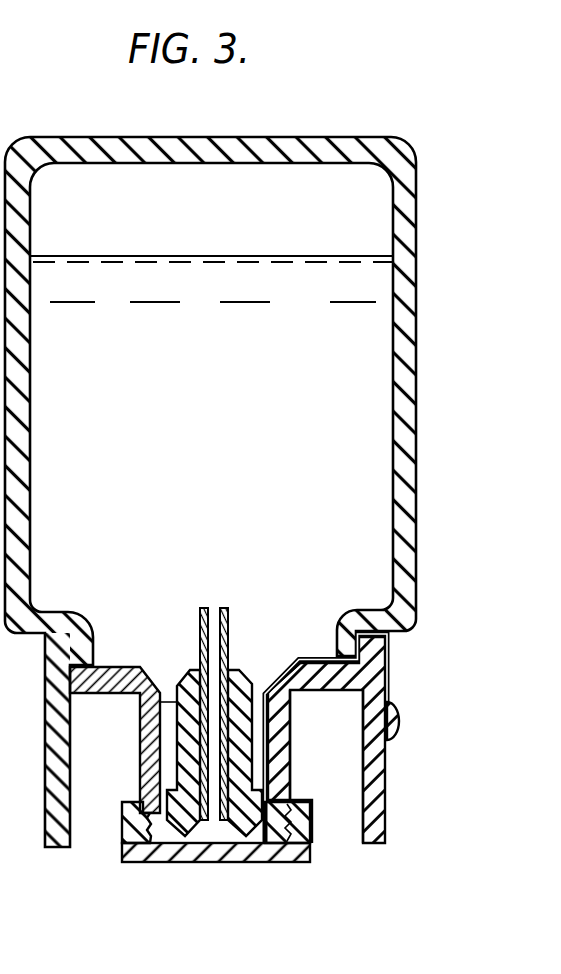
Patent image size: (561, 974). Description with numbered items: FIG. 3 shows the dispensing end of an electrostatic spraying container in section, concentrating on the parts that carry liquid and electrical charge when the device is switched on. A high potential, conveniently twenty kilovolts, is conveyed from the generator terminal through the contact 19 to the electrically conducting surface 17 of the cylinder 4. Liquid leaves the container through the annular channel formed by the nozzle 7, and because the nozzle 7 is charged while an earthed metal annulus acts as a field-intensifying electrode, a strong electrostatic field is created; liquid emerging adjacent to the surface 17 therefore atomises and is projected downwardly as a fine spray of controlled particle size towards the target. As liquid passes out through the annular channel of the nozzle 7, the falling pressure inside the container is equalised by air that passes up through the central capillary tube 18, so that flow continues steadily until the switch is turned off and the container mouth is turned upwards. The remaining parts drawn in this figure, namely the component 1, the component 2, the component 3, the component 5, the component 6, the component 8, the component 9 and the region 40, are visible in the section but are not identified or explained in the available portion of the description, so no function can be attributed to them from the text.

The container 1 is at (416, 167).
The cap 2 is at (386, 782).
The cap skirt 3 is at (362, 760).
The cylinder 4 is at (290, 722).
The valve body 5 is at (238, 668).
The holder 6 is at (170, 710).
The nozzle 7 is at (172, 826).
The valve stem 8 is at (213, 607).
The passage 9 is at (311, 851).
The electrically conducting surface 17 is at (283, 847).
The central capillary tube 18 is at (316, 658).
The contact 19 is at (399, 724).
The liquid 40 is at (157, 268).